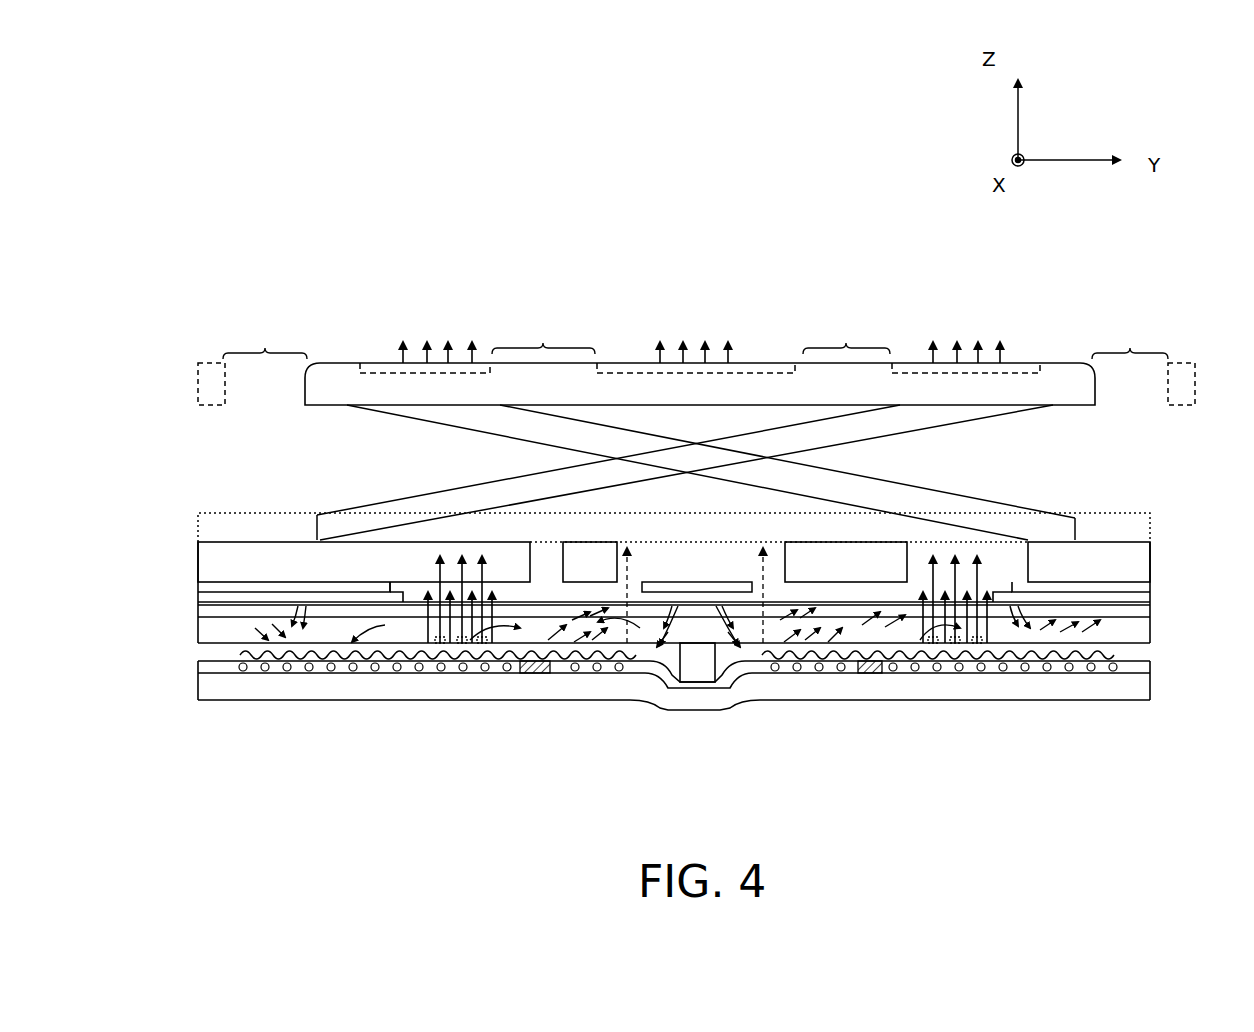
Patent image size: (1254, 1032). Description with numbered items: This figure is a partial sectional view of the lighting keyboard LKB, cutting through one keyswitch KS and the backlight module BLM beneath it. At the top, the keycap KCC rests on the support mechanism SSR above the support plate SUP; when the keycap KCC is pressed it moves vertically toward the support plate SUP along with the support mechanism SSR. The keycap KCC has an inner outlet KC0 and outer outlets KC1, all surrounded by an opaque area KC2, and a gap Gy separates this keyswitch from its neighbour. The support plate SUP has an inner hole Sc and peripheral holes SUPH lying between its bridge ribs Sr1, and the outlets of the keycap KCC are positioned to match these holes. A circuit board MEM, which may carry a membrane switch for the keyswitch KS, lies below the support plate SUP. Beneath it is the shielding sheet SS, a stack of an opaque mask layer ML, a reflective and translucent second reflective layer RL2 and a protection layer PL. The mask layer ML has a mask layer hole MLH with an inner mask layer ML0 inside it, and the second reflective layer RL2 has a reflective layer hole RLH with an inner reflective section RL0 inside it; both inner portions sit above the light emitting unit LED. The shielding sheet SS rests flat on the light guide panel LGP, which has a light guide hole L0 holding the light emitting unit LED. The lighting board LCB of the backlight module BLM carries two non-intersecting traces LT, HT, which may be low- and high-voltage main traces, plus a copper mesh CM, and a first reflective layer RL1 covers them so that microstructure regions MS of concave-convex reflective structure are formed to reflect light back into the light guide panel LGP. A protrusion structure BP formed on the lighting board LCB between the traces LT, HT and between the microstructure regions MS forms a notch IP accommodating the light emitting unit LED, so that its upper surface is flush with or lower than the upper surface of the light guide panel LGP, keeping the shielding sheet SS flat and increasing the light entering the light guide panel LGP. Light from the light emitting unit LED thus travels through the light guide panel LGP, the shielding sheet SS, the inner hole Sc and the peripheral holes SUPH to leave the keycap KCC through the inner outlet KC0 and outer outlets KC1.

The lighting keyboard LKB is at (474, 152).
The keyswitch KS is at (696, 268).
The outer outlet KC1 is at (378, 363).
The opaque area KC2 is at (543, 343).
The inner outlet KC0 is at (615, 363).
The gap Gy is at (695, 339).
The keycap KCC is at (209, 335).
The support mechanism SSR is at (485, 420).
The support plate SUP is at (1153, 562).
The circuit board MEM is at (1135, 513).
The peripheral hole SUPH is at (420, 565).
The bridge rib Sr1 is at (590, 552).
The mask layer ML is at (205, 587).
The mask layer hole MLH is at (395, 588).
The reflective layer hole RLH is at (408, 597).
The second reflective layer RL2 is at (200, 603).
The shielding sheet SS is at (1160, 592).
The light guide panel LGP is at (1158, 632).
The protection layer PL is at (198, 664).
The first reflective layer RL1 is at (198, 697).
The trace LT is at (532, 674).
The trace HT is at (868, 674).
The backlight module BLM is at (1050, 722).
The protrusion structure BP is at (684, 712).
The lighting board LCB is at (343, 703).
The light emitting unit LED is at (697, 668).
The notch IP is at (715, 690).
The light guide hole L0 is at (642, 655).
The copper mesh CM is at (473, 668).
The microstructure region MS is at (430, 630).
The inner reflective section RL0 is at (557, 593).
The inner mask layer ML0 is at (700, 582).
The inner hole Sc is at (740, 550).